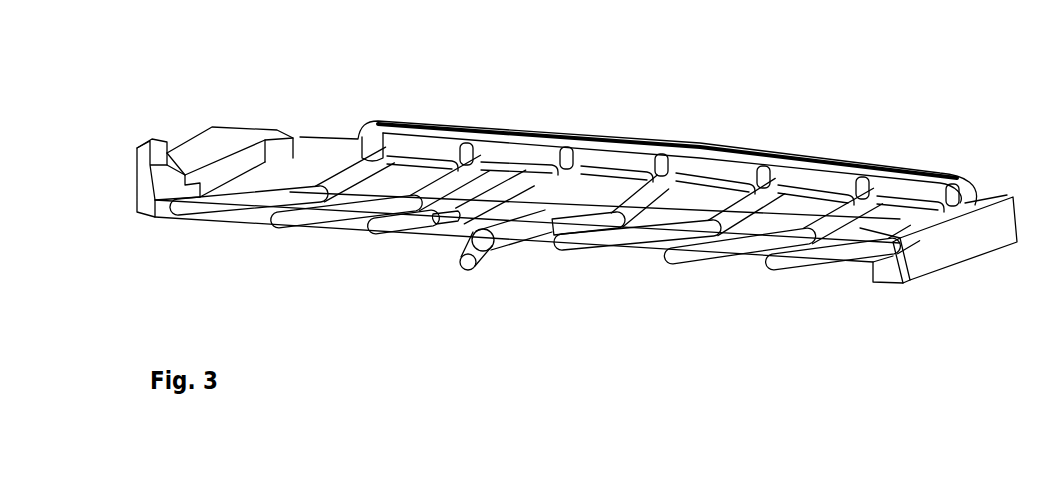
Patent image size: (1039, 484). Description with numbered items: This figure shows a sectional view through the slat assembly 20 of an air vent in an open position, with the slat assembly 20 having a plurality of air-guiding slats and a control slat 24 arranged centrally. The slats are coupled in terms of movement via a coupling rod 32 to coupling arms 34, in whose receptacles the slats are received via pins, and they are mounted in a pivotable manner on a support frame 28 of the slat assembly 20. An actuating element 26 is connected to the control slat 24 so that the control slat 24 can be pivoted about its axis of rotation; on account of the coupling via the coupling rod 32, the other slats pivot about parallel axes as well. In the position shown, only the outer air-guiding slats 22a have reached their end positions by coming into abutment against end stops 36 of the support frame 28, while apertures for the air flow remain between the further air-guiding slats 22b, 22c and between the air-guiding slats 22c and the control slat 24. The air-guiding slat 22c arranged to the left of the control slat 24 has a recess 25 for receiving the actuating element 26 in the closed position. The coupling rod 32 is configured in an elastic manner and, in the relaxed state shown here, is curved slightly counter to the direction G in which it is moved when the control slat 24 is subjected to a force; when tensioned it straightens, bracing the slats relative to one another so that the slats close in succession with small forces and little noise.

The slat assembly 20 is at (797, 125).
The outer air-guiding slats 22a is at (215, 203).
The air-guiding slats 22b is at (330, 210).
The air-guiding slats 22c is at (413, 225).
The control slat 24 is at (582, 236).
The recess 25 is at (462, 220).
The actuating element 26 is at (467, 265).
The support frame 28 is at (227, 135).
The coupling rod 32 is at (650, 150).
The coupling arms 34 is at (467, 140).
The end stops 36 is at (180, 192).
The direction G is at (934, 148).